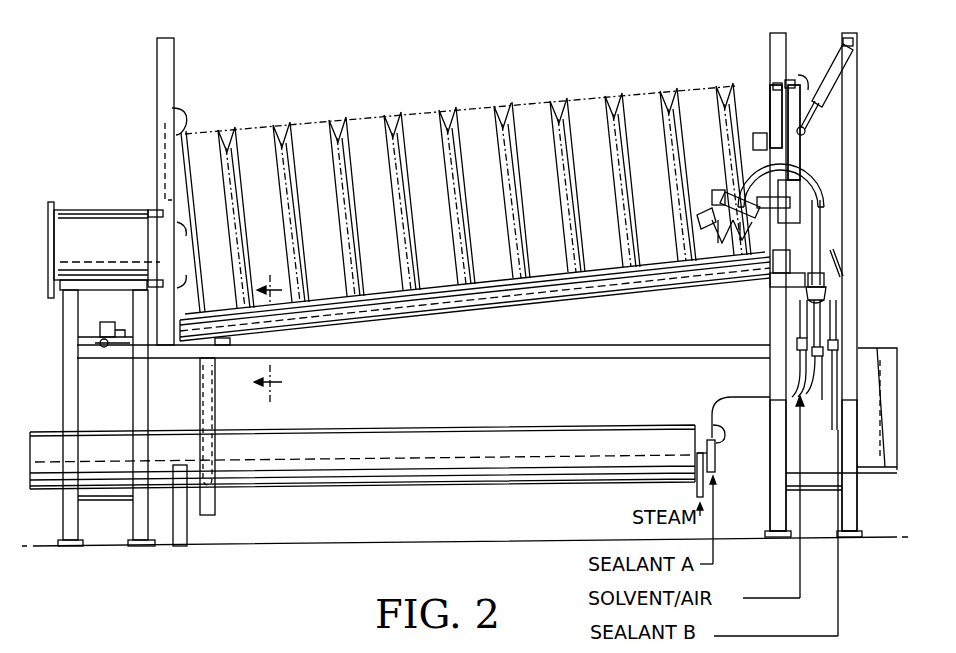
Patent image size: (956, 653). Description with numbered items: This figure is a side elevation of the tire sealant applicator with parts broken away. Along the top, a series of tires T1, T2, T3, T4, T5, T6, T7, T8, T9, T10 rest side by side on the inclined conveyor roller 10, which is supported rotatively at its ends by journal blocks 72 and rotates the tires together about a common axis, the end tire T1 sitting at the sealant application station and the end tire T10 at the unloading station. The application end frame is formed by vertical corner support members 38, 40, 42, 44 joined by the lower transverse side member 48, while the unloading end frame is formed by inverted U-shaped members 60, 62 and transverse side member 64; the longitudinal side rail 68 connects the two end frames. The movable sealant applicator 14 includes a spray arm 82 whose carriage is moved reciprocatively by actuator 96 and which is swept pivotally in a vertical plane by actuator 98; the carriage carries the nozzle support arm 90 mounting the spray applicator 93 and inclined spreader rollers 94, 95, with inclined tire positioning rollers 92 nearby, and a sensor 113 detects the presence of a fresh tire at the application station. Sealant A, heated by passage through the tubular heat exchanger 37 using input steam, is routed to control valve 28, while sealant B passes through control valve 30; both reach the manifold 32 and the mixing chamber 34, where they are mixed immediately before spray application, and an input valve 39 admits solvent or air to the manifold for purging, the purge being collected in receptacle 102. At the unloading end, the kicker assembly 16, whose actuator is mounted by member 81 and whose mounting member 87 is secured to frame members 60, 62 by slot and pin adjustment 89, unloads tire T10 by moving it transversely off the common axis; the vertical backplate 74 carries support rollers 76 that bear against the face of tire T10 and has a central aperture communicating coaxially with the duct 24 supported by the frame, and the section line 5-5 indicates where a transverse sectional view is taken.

The conveyor roller 10 is at (582, 296).
The sealant applicator 14 is at (808, 157).
The kicker assembly 16 is at (192, 380).
The duct 24 is at (100, 212).
The control valve 28 is at (797, 345).
The control valve 30 is at (843, 343).
The manifold 32 is at (826, 292).
The mixing chamber 34 is at (825, 257).
The tubular heat exchanger 37 is at (387, 468).
The vertical corner support member 38 is at (780, 462).
The input valve 39 is at (815, 497).
The vertical corner support member 40 is at (858, 513).
The vertical corner support member 42 is at (773, 62).
The vertical corner support member 44 is at (855, 72).
The lower transverse side member 48 is at (818, 492).
The section line 5- 5 is at (268, 336).
The inverted U-shaped member 60 is at (65, 366).
The inverted U-shaped member 62 is at (133, 392).
The transverse side member 64 is at (107, 500).
The longitudinal side rail 68 is at (462, 359).
The journal block 72 is at (767, 297).
The vertical backplate 74 is at (175, 64).
The support rollers 76 is at (172, 108).
The actuator mounting member 81 is at (215, 507).
The spray arm 82 is at (790, 107).
The mounting member 87 is at (222, 345).
The slot and pin adjustment 89 is at (100, 342).
The nozzle support arm 90 is at (712, 200).
The inclined tire positioning rollers 92 is at (820, 233).
The spray applicator 93 is at (718, 245).
The inclined spreader roller 94 is at (737, 243).
The inclined spreader roller 95 is at (703, 233).
The double acting reciprocative actuator 96 is at (773, 125).
The double acting reciprocative actuator 98 is at (827, 97).
The receptacle 102 is at (883, 420).
The sensor 113 is at (752, 170).
The tire T1 is at (690, 101).
The tire T2 is at (635, 101).
The tire T3 is at (585, 102).
The tire T4 is at (531, 109).
The tire T5 is at (476, 116).
The tire T6 is at (420, 124).
The tire T7 is at (363, 127).
The tire T8 is at (308, 136).
The tire T9 is at (256, 141).
The tire T10 is at (205, 141).